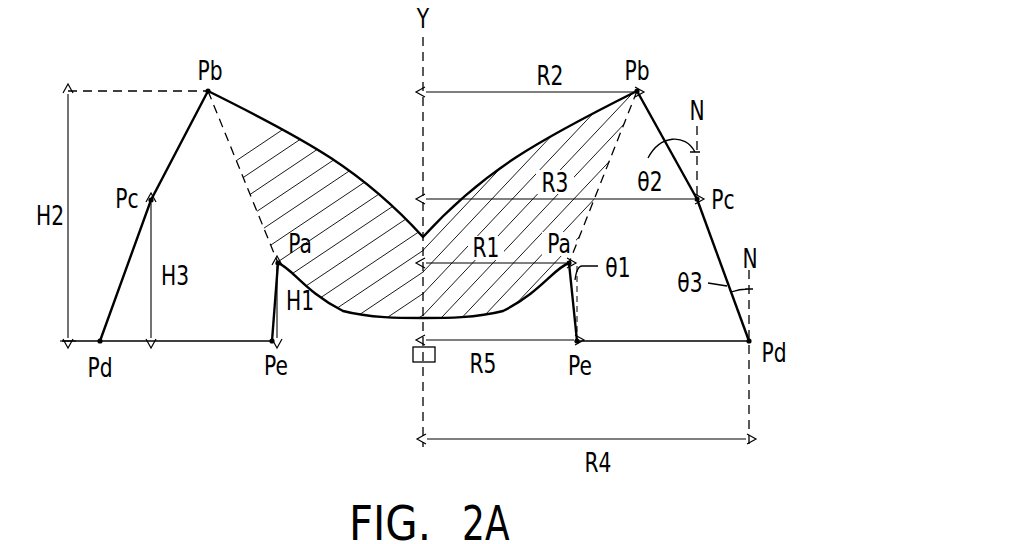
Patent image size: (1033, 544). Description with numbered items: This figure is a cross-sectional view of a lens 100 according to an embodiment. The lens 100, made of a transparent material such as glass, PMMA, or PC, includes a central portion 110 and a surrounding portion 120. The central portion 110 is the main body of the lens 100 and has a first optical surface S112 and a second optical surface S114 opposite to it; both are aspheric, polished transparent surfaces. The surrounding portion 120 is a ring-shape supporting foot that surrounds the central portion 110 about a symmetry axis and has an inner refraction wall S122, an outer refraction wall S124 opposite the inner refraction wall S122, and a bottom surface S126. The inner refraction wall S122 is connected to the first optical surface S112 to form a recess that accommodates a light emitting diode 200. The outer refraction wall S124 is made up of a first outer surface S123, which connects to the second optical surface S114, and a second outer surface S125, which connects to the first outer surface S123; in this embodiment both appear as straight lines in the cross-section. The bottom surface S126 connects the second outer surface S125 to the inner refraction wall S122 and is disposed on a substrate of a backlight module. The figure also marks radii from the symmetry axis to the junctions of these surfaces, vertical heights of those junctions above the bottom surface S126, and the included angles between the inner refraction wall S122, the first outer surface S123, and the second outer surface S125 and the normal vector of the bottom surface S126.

The lens 100 is at (457, 266).
The central portion 110 is at (422, 266).
The surrounding portion 120 is at (457, 229).
The light emitting diode 200 is at (413, 353).
The first optical surface S112 is at (344, 316).
The second optical surface S114 is at (344, 164).
The inner refraction wall S122 is at (568, 303).
The first outer surface S123 is at (654, 106).
The outer refraction wall S124 is at (744, 189).
The second outer surface S125 is at (715, 235).
The bottom surface S126 is at (712, 346).